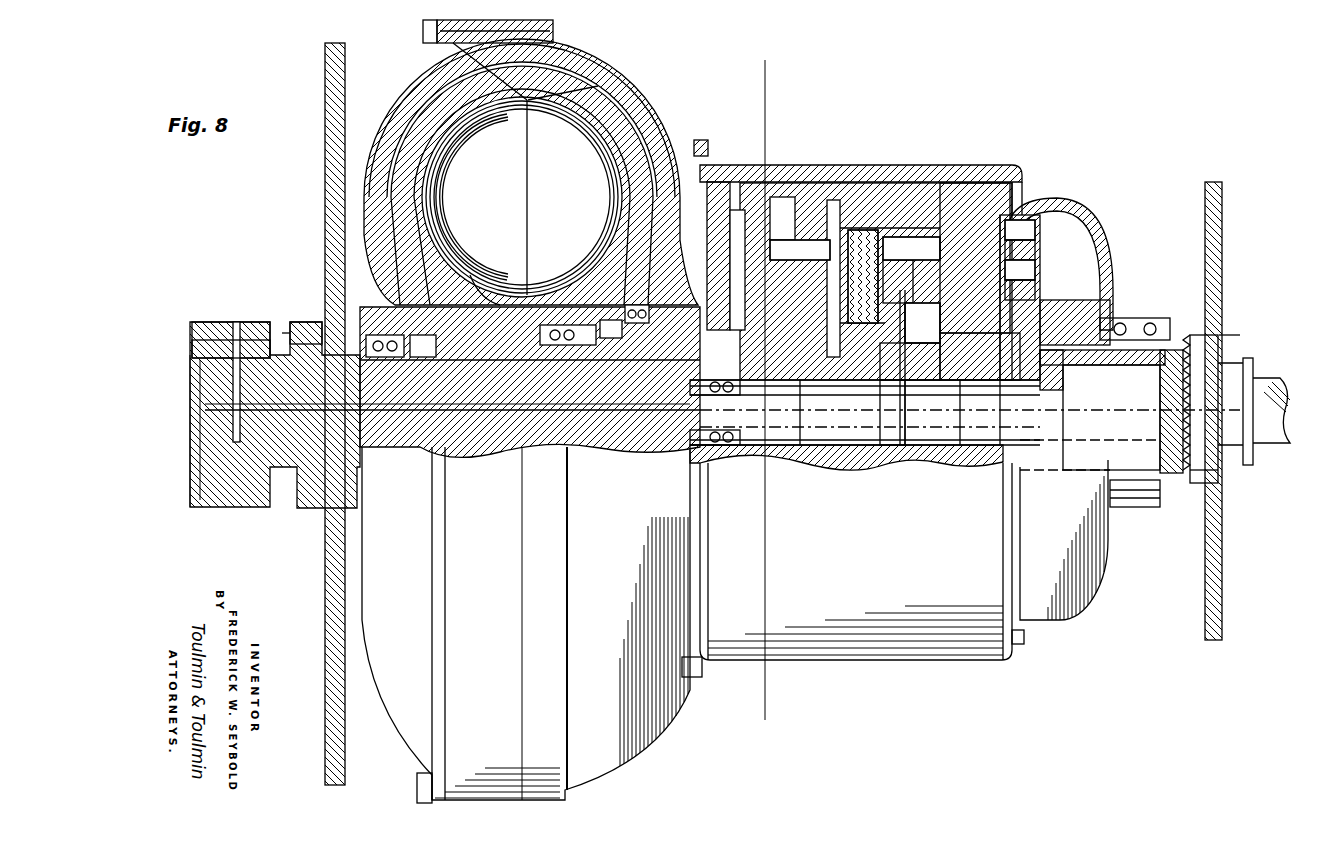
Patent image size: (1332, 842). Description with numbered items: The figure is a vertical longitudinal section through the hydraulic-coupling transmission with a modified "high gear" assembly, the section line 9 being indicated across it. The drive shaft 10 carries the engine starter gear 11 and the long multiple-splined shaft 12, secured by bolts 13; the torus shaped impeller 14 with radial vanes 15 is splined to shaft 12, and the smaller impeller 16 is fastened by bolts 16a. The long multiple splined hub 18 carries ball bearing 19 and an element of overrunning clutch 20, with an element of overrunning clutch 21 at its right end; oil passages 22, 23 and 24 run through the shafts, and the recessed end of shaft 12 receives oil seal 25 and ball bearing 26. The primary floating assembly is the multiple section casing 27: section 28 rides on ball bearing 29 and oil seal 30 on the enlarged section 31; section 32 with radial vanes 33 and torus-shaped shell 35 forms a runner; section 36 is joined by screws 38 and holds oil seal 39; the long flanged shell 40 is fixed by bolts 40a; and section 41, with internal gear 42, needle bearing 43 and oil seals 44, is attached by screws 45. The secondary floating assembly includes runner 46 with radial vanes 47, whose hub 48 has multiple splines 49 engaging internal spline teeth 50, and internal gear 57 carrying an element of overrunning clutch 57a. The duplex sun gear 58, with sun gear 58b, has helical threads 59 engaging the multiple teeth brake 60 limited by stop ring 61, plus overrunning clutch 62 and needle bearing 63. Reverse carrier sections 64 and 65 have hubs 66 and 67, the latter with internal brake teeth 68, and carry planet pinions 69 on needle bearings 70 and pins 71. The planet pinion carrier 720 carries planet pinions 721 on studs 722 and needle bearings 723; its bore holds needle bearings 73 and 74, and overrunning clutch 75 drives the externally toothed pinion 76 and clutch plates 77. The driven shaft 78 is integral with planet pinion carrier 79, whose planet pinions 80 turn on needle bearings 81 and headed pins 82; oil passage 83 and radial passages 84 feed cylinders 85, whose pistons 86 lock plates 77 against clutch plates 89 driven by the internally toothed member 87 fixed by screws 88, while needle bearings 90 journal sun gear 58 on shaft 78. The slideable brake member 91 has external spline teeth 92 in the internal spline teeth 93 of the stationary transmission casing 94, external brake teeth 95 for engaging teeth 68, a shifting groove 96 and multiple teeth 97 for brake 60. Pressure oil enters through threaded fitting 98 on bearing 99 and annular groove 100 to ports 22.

The section line 9- 9 is at (768, 93).
The drive shaft 10 is at (236, 404).
The engine starter gear 11 is at (325, 147).
The long multiple-splined shaft 12 is at (488, 450).
The bolts 13 is at (303, 320).
The torus shaped impeller 14 is at (404, 120).
The radial vanes 15 is at (526, 227).
The smaller impeller 16 is at (452, 184).
The bolts 16a is at (520, 284).
The long multiple splined hub 18 is at (598, 340).
The ball bearing 19 is at (575, 312).
The overrunning clutch 20 is at (565, 347).
The overrunning clutch 21 is at (865, 412).
The oil passages 22 is at (198, 443).
The oil passage 23 is at (300, 470).
The oil passage 24 is at (520, 455).
The oil seal 25 is at (700, 432).
The ball bearing 26 is at (726, 460).
The multiple section casing 27 is at (556, 28).
The left hand section 28 is at (412, 82).
The ball bearing 29 is at (420, 360).
The oil seal 30 is at (382, 358).
The enlarged section 31 is at (440, 447).
The casing section 32 is at (532, 68).
The radial vanes 33 is at (546, 72).
The torus-shaped shell 35 is at (608, 160).
The third section 36 is at (648, 72).
The screws 38 is at (423, 32).
The oil seal 39 is at (650, 330).
The fourth section 40 is at (803, 165).
The bolts 40a is at (708, 150).
The last section 41 is at (1088, 208).
The internal gear 42 is at (1078, 205).
The needle bearing 43 is at (1082, 300).
The oil seals 44 is at (1150, 318).
The screws 45 is at (1020, 215).
The runner 46 is at (674, 110).
The radial vanes 47 is at (645, 60).
The hub 48 is at (630, 325).
The multiple splines 49 is at (690, 278).
The internal spline teeth 50 is at (705, 262).
The internal gear 57 is at (945, 190).
The overrunning clutch 57a is at (1018, 275).
The duplex sun gear 58 is at (975, 563).
The sun gear 58b is at (1005, 183).
The multiple helical threads 59 is at (1080, 432).
The multiple teeth brake 60 is at (1150, 482).
The stop ring 61 is at (1050, 390).
The overrunning clutch 62 is at (968, 385).
The needle bearing 63 is at (982, 375).
The planetary pinion carrier section 64 is at (1036, 250).
The planetary pinion carrier section 65 is at (1060, 204).
The hub 66 is at (922, 330).
The hub 67 is at (1110, 305).
The internal brake teeth 68 is at (1100, 320).
The planet pinions 69 is at (1034, 230).
The needle bearings 70 is at (1036, 270).
The pins 71 is at (1036, 292).
The needle bearing 73 is at (799, 412).
The needle bearing 74 is at (882, 382).
The overrunning clutch 75 is at (836, 385).
The externally toothed pinion 76 is at (866, 385).
The clutch plates 77 is at (822, 382).
The driven shaft 78 is at (1272, 446).
The planet pinion carrier 79 is at (893, 450).
The planet pinions 80 is at (962, 200).
The needle bearings 81 is at (985, 200).
The headed pins 82 is at (905, 247).
The longitudinal oil passage 83 is at (765, 470).
The radial oil passages 84 is at (902, 450).
The small cylinders 85 is at (922, 321).
The small pistons 86 is at (899, 248).
The internally toothed member 87 is at (845, 200).
The screws 88 is at (912, 200).
The multiple clutch plates 89 is at (863, 205).
The needle bearings 90 is at (990, 450).
The slideable brake member 91 is at (1222, 350).
The external spline teeth 92 is at (1210, 332).
The internal spline teeth 93 is at (1222, 336).
The stationary transmission casing 94 is at (1222, 190).
The external brake teeth 95 is at (1030, 380).
The groove 96 is at (1253, 365).
The multiple teeth 97 is at (1172, 475).
The threaded fitting 98 is at (237, 320).
The bearing 99 is at (205, 320).
The annular groove 100 is at (196, 347).
The planet pinion carrier 720 is at (812, 200).
The planet pinions 721 is at (738, 232).
The studs 722 is at (862, 200).
The needle bearings 723 is at (800, 249).